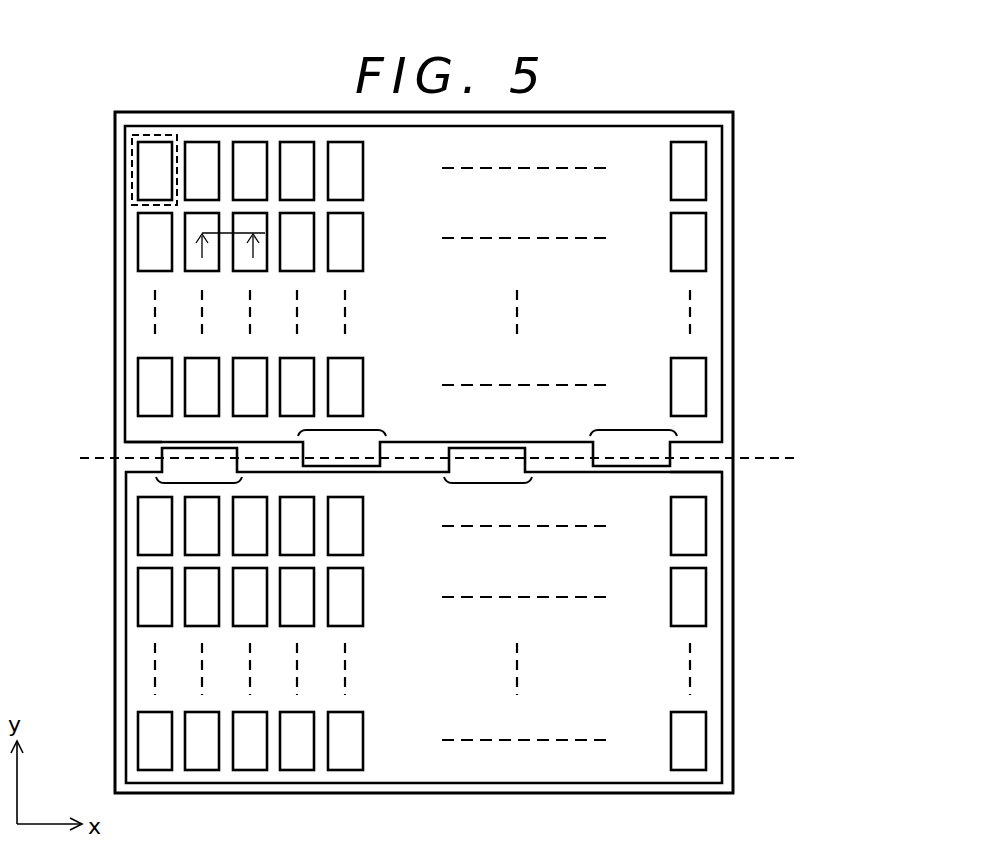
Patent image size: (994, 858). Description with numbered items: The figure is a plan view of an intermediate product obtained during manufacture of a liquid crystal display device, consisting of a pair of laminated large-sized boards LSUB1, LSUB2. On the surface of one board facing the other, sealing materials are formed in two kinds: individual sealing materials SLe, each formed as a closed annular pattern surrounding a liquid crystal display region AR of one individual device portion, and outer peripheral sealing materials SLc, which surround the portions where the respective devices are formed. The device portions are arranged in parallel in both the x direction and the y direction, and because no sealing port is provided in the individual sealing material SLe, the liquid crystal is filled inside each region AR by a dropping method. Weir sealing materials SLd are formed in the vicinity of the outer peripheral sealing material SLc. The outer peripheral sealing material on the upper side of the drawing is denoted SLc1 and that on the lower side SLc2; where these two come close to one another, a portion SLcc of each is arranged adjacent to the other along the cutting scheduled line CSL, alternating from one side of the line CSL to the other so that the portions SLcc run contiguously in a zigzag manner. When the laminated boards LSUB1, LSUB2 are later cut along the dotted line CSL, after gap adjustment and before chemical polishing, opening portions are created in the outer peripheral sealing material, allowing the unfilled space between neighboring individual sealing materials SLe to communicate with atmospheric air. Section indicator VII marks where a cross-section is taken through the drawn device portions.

The individual sealing material SLe is at (137, 160).
The outer peripheral sealing material SLc is at (127, 362).
The outer peripheral sealing material on the upper side SLc1 is at (722, 275).
The outer peripheral sealing material on the lower side SLc2 is at (722, 583).
The weir sealing material SLd is at (633, 429).
The adjacent portion of outer peripheral sealing material SLcc is at (710, 471).
The cutting scheduled line CSL is at (434, 454).
The large-sized board LSUB1 is at (733, 670).
The large-sized board LSUB2 is at (485, 452).
The liquid crystal display region AR is at (178, 206).
The section line VII is at (213, 293).